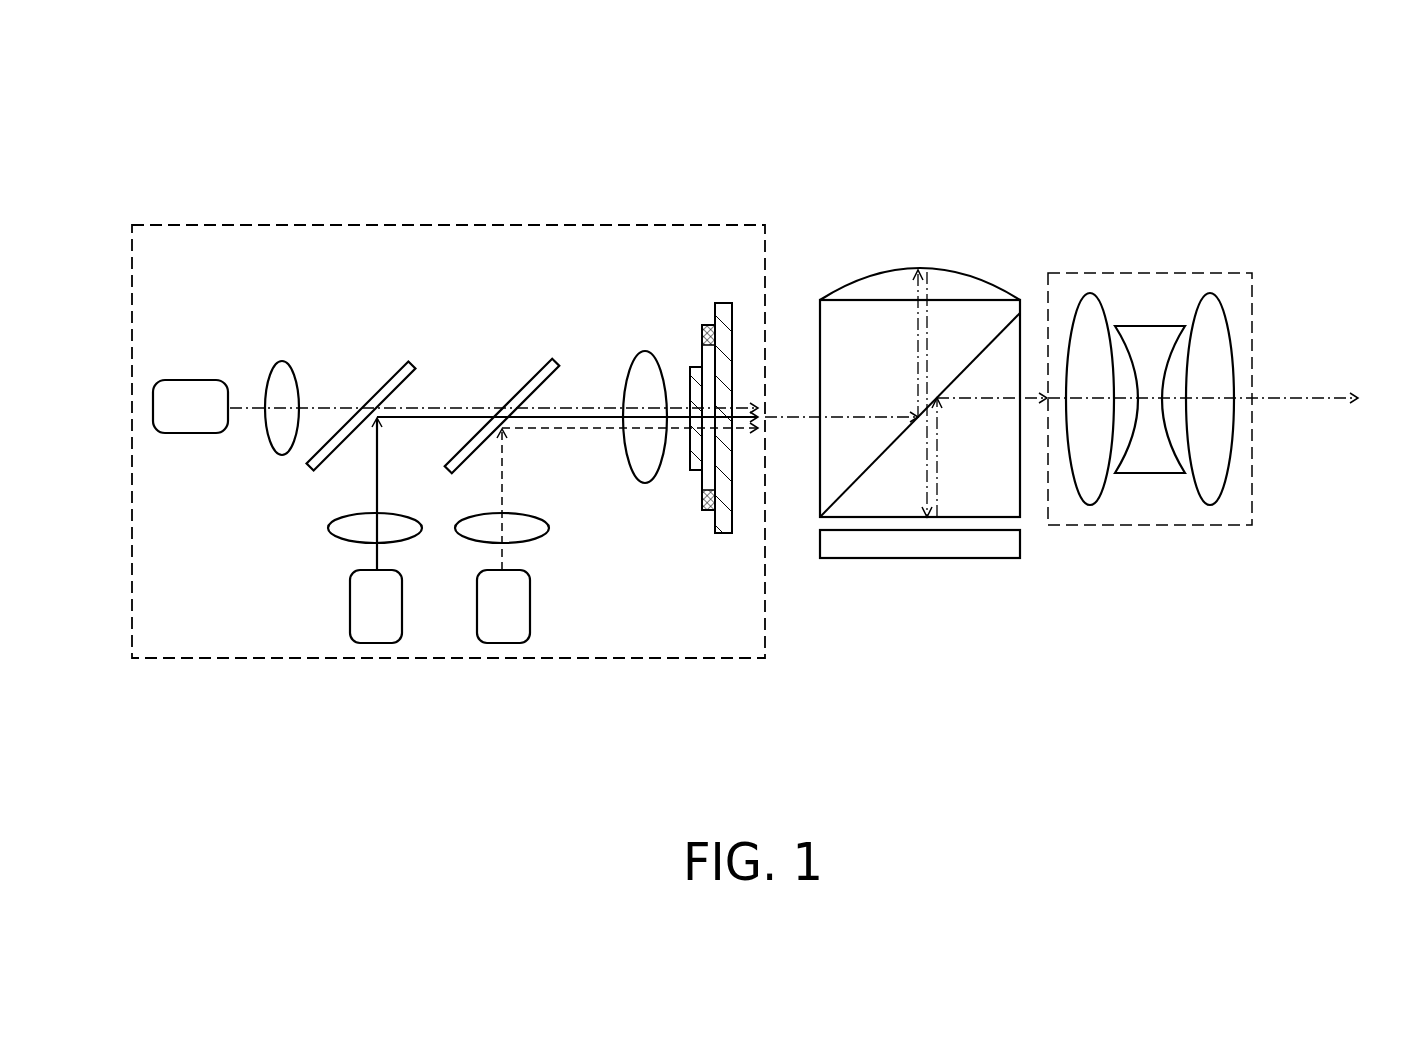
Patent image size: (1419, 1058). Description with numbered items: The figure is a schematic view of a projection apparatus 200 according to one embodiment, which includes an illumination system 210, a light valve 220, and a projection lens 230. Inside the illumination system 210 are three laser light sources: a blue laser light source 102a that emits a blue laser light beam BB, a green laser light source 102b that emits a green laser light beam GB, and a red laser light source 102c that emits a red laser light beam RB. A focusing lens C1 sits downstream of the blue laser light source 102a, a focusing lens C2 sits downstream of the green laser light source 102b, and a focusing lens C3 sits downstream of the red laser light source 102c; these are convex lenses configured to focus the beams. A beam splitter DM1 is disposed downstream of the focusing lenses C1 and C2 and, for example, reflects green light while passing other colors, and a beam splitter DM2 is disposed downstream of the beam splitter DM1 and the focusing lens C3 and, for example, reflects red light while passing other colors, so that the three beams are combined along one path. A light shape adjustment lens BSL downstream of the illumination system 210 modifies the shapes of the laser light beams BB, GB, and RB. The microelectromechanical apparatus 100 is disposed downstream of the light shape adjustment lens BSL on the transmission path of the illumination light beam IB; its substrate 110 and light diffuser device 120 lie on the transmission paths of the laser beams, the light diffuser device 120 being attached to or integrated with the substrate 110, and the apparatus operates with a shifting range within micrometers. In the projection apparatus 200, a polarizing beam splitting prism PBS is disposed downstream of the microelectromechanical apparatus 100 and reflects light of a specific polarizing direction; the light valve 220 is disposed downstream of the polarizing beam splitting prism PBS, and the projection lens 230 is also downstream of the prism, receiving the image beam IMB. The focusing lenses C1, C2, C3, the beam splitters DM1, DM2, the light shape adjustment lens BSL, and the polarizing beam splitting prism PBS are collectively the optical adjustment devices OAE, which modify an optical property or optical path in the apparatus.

The projection apparatus 200 is at (1275, 720).
The illumination system 210 is at (215, 222).
The blue laser light source 102a is at (190, 378).
The green laser light source 102b is at (375, 644).
The red laser light source 102c is at (502, 644).
The focusing lens C1 is at (270, 365).
The focusing lens C2 is at (343, 541).
The focusing lens C3 is at (470, 541).
The beam splitter DM1 is at (385, 388).
The beam splitter DM2 is at (522, 385).
The light shape adjustment lens BSL is at (640, 355).
The blue laser light beam BB is at (246, 412).
The green laser light beam GB is at (379, 490).
The red laser light beam RB is at (505, 490).
The illumination light beam IB is at (790, 420).
The microelectromechanical apparatus 100 is at (707, 323).
The substrate 110 is at (732, 472).
The light diffuser device 120 is at (697, 472).
The polarizing beam splitting prism PBS is at (995, 365).
The image beam IMB is at (940, 438).
The light valve 220 is at (984, 560).
The projection lens 230 is at (1190, 273).
The optical adjustment devices OAE is at (1342, 277).